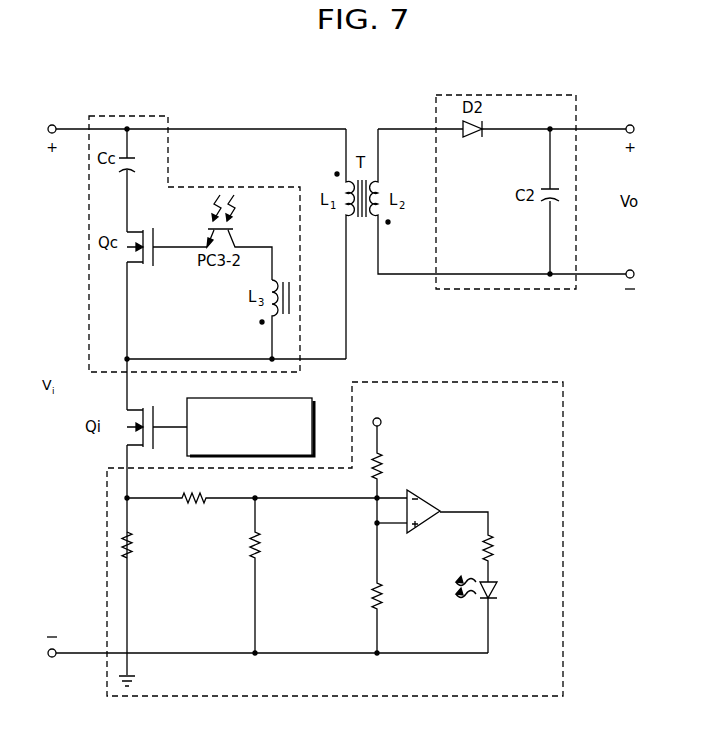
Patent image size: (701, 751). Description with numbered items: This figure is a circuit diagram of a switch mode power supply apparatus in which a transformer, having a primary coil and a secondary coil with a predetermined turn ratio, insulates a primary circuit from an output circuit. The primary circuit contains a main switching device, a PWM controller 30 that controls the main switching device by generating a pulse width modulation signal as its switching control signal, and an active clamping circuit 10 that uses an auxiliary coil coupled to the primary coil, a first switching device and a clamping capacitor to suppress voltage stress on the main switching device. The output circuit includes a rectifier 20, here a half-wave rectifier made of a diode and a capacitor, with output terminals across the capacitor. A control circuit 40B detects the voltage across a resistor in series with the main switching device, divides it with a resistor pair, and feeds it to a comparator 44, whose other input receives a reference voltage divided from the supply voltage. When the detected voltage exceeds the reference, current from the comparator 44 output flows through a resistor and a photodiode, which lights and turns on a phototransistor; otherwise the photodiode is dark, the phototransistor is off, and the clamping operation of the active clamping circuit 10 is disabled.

The active clamping circuit 10 is at (201, 187).
The rectifier 20 is at (577, 106).
The PWM controller 30 is at (283, 397).
The control circuit 40B is at (452, 381).
The comparator 44 is at (428, 497).